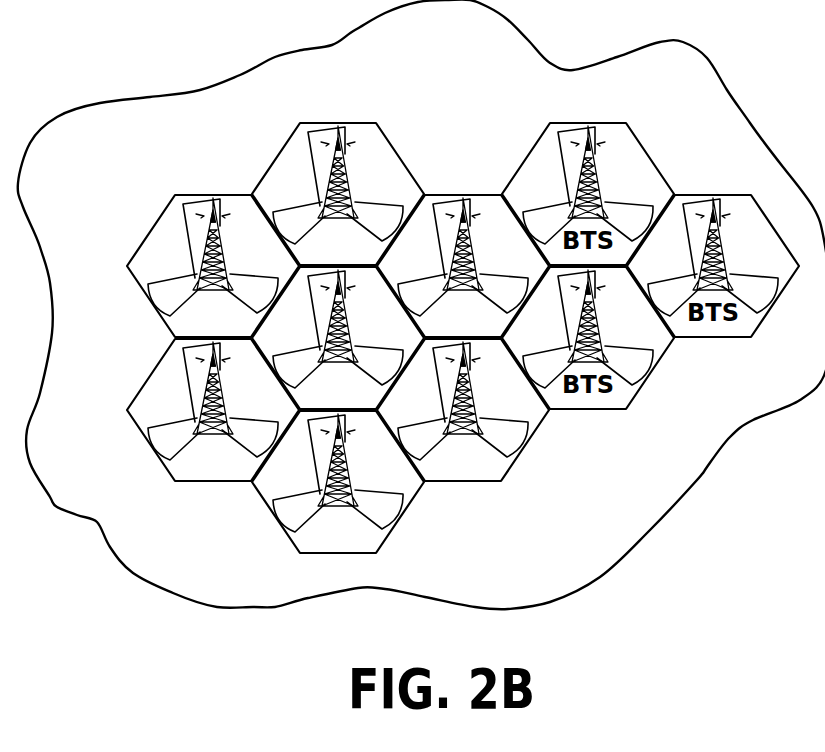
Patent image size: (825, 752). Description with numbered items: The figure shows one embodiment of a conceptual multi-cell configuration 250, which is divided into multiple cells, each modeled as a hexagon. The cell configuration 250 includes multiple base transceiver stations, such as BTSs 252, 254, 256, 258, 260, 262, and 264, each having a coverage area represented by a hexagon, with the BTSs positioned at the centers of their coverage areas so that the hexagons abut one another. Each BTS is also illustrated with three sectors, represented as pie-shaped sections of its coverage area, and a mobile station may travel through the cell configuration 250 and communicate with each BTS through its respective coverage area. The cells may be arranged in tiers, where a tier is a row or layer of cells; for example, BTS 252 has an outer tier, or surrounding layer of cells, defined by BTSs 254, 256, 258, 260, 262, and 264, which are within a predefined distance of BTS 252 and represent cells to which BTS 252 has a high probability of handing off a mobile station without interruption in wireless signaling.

The multi-cell configuration 250 is at (164, 164).
The BTS 252 is at (338, 338).
The BTS 254 is at (338, 194).
The BTS 256 is at (463, 266).
The BTS 258 is at (463, 410).
The BTS 260 is at (338, 482).
The BTS 262 is at (213, 410).
The BTS 264 is at (213, 266).